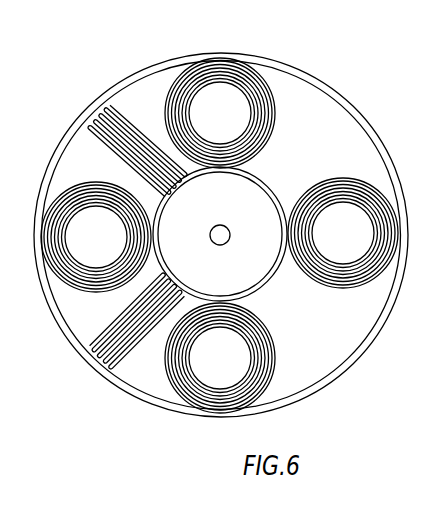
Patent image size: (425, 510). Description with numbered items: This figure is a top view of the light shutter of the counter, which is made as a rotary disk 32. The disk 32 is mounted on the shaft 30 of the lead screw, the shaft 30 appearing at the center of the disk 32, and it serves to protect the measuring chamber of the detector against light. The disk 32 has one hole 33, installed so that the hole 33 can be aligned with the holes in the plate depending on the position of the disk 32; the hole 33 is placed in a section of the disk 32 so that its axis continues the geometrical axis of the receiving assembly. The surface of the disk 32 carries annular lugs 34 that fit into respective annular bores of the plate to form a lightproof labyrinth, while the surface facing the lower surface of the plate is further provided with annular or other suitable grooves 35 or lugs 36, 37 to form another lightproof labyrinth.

The shaft 30 is at (229, 231).
The rotary disk 32 is at (357, 153).
The hole 33 is at (72, 243).
The annular lugs 34 is at (305, 75).
The grooves 35 is at (258, 330).
The lugs 36 is at (90, 355).
The lugs 37 is at (95, 115).